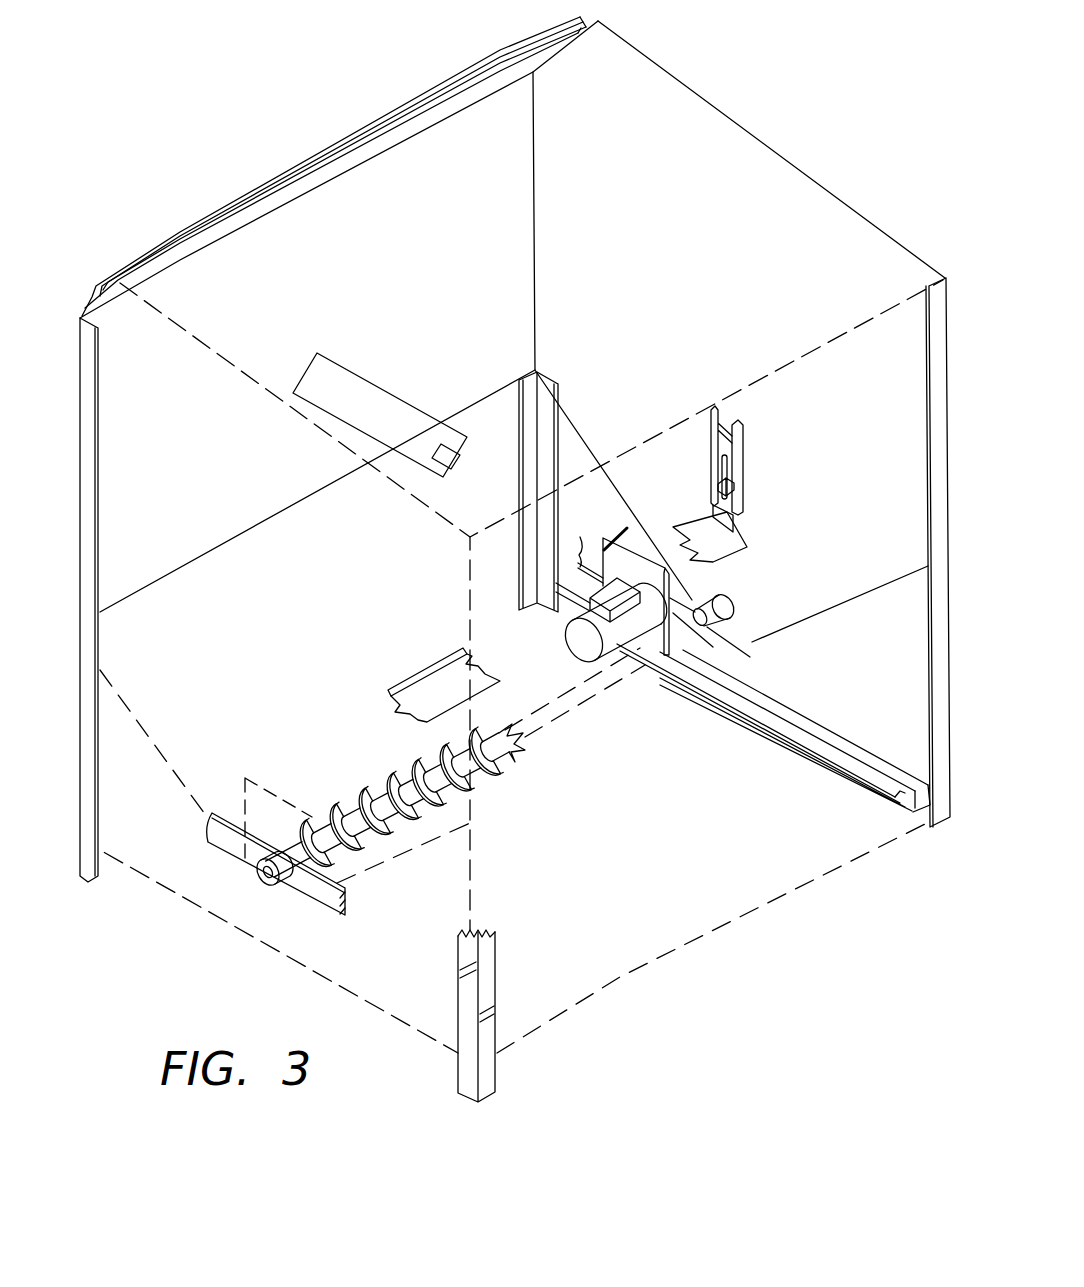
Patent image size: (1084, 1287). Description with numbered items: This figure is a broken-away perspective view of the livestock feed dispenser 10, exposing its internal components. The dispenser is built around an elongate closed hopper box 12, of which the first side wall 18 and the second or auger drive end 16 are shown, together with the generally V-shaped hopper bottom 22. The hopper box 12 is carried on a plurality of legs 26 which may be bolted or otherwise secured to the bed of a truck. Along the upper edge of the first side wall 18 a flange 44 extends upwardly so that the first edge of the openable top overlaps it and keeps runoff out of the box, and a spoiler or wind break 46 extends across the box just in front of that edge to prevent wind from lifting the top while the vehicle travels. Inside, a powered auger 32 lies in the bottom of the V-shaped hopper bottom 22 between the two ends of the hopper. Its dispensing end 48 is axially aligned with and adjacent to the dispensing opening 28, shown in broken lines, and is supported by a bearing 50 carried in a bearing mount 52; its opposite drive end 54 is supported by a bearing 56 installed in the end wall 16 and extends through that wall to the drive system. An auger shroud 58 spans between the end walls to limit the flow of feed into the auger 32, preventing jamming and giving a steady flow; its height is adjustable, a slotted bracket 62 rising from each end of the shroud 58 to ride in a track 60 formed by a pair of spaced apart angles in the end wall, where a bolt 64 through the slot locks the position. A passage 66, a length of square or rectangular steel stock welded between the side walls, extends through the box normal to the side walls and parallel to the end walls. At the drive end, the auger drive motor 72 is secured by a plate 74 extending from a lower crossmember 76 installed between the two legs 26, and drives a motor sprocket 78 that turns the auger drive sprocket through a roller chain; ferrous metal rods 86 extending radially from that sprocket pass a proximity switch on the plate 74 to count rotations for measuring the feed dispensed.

The livestock feed dispenser 10 is at (227, 967).
The hopper box 12 is at (783, 160).
The auger drive end 16 is at (720, 304).
The first side wall 18 is at (423, 287).
The V-shaped hopper bottom 22 is at (178, 793).
The legs 26 is at (521, 518).
The dispensing opening 28 is at (262, 775).
The auger 32 is at (487, 776).
The flange 44 is at (365, 163).
The spoiler or wind break 46 is at (373, 127).
The dispensing end of the auger 48 is at (298, 843).
The bearing 50 is at (257, 875).
The bearing mount 52 is at (327, 910).
The drive end of the auger 54 is at (712, 630).
The bearing 56 is at (737, 612).
The auger shroud 58 is at (748, 552).
The track 60 is at (722, 410).
The slotted bracket 62 is at (722, 460).
The bolt 64 is at (735, 490).
The passage 66 is at (407, 400).
The auger drive motor 72 is at (575, 652).
The plate 74 is at (655, 643).
The lower crossmember 76 is at (767, 733).
The motor sprocket 78 is at (678, 607).
The ferrous metal rods 86 is at (630, 528).